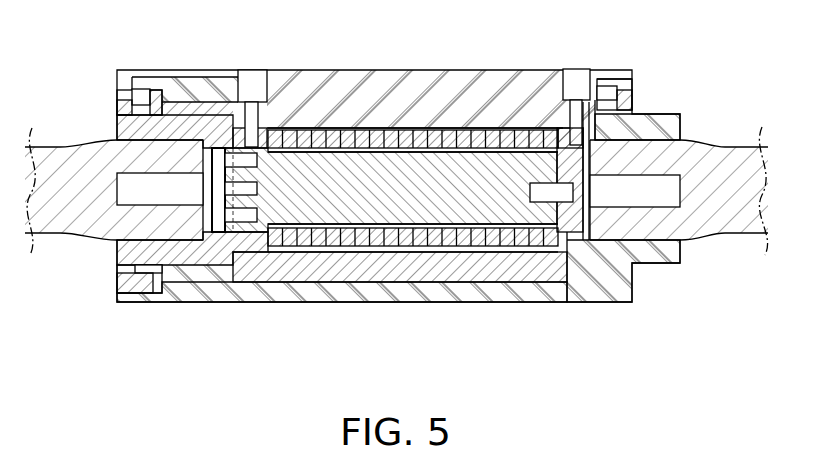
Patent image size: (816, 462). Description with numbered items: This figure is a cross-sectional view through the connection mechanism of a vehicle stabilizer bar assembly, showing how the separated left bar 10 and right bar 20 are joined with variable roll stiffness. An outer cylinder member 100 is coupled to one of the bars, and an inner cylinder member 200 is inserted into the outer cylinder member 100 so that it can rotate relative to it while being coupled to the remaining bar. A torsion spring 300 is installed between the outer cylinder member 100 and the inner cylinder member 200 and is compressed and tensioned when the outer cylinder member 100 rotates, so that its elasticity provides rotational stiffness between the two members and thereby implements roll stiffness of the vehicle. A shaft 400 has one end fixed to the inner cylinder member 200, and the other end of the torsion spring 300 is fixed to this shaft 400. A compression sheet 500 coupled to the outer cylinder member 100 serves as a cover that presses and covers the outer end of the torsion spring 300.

The left bar 10 is at (735, 150).
The right bar 20 is at (52, 150).
The outer cylinder member 100 is at (607, 287).
The inner cylinder member 200 is at (492, 270).
The torsion spring 300 is at (347, 238).
The shaft 400 is at (423, 205).
The compression sheet 500 is at (487, 70).